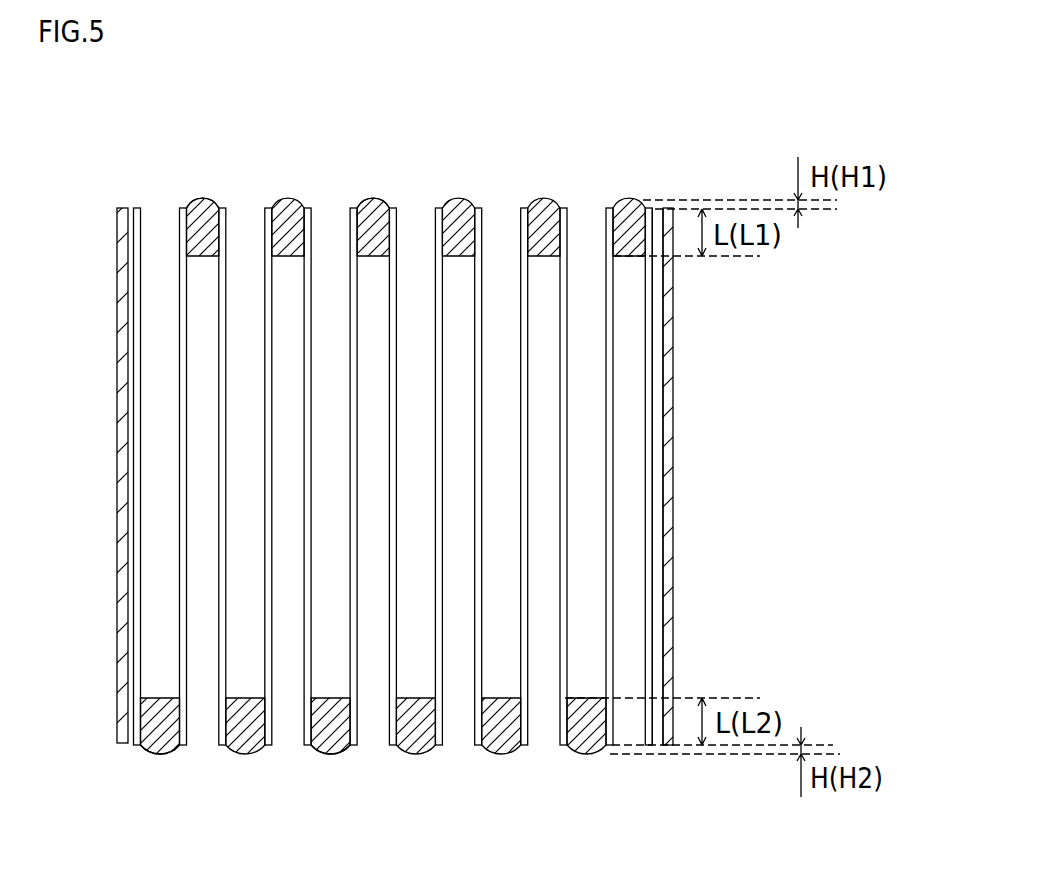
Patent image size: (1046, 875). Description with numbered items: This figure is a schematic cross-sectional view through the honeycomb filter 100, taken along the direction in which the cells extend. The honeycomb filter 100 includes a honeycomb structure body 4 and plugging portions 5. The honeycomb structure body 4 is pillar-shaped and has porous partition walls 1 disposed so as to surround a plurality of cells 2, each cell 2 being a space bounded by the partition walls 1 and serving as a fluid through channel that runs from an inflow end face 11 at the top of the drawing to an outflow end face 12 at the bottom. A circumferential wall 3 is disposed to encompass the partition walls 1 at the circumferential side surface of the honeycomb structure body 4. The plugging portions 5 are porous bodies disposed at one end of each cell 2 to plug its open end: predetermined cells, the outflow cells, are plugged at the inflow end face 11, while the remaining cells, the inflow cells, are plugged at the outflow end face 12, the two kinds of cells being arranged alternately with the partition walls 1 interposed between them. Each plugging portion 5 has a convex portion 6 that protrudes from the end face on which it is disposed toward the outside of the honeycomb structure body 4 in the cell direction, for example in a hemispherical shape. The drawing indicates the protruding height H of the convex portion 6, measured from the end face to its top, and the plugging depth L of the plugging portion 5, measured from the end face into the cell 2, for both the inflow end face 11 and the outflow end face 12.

The honeycomb filter 100 is at (766, 74).
The partition walls 1 is at (565, 230).
The cells 2 is at (498, 277).
The circumferential wall 3 is at (673, 359).
The honeycomb structure body 4 is at (691, 311).
The plugging portions 5 is at (386, 212).
The convex portions 6 is at (360, 187).
The inflow end face 11 is at (146, 179).
The outflow end face 12 is at (167, 761).